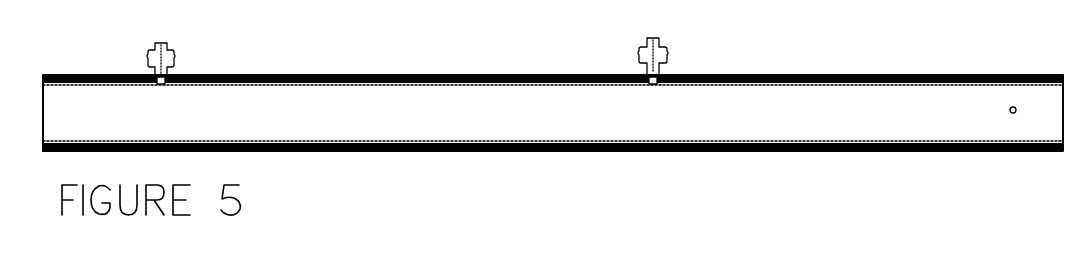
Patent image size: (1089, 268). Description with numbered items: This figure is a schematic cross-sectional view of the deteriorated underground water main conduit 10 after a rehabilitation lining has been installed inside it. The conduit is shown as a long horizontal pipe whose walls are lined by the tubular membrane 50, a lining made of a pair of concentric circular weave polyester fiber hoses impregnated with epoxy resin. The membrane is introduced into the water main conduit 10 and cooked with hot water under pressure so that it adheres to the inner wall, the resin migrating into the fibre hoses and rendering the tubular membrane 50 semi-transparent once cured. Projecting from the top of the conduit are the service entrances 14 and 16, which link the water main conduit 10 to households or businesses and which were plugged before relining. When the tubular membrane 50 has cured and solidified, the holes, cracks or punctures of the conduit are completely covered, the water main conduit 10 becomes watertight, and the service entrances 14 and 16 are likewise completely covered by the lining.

The water main conduit 10 is at (553, 115).
The service entrance 14 is at (151, 41).
The service entrance 16 is at (642, 37).
The tubular membrane 50 is at (522, 88).